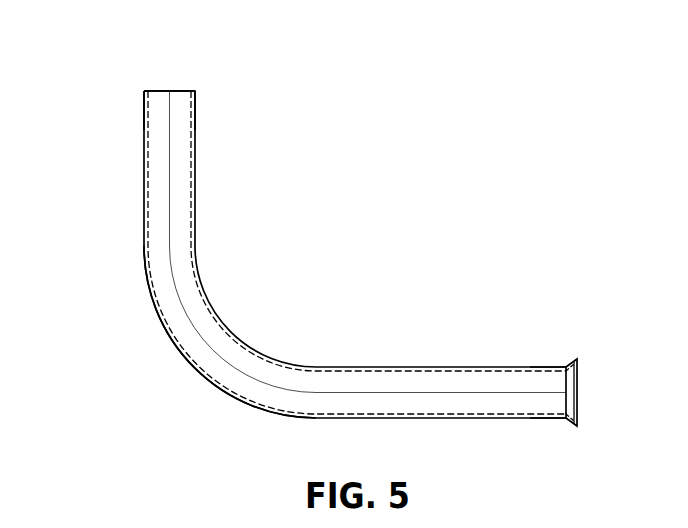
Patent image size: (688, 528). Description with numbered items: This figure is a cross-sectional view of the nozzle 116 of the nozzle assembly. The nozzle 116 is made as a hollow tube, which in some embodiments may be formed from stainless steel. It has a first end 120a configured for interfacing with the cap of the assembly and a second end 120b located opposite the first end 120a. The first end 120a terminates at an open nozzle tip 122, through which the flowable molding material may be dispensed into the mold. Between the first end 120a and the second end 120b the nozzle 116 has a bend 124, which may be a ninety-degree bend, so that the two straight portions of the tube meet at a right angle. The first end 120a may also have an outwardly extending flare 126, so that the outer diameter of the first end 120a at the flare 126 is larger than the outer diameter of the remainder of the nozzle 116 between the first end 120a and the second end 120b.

The nozzle 116 is at (507, 128).
The first end 120a is at (208, 85).
The second end 120b is at (548, 357).
The nozzle tip 122 is at (144, 91).
The bend 124 is at (184, 356).
The flare 126 is at (571, 426).